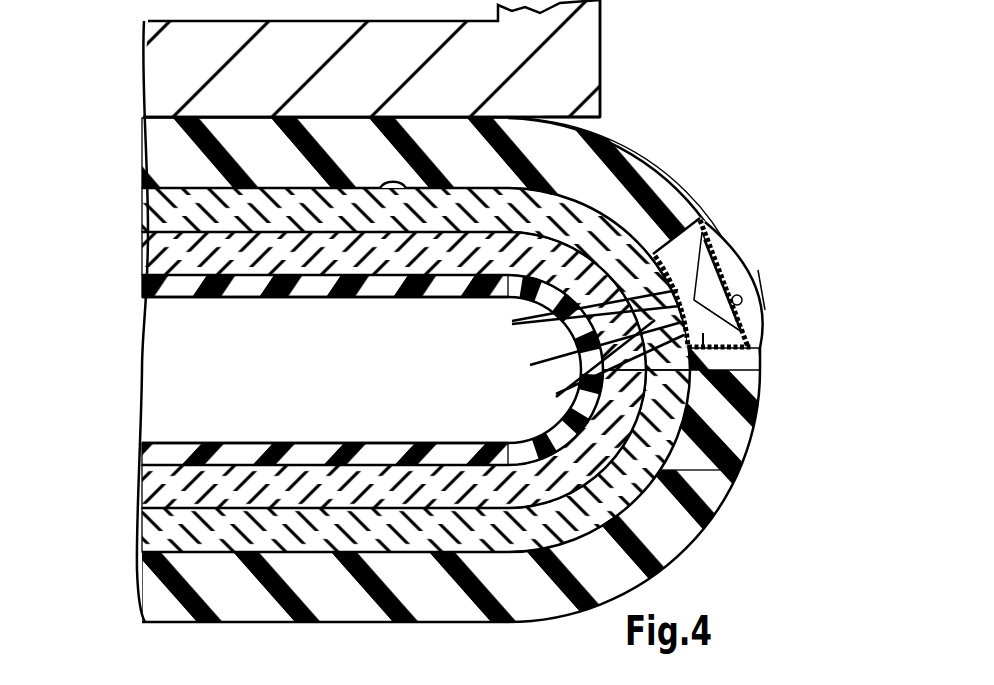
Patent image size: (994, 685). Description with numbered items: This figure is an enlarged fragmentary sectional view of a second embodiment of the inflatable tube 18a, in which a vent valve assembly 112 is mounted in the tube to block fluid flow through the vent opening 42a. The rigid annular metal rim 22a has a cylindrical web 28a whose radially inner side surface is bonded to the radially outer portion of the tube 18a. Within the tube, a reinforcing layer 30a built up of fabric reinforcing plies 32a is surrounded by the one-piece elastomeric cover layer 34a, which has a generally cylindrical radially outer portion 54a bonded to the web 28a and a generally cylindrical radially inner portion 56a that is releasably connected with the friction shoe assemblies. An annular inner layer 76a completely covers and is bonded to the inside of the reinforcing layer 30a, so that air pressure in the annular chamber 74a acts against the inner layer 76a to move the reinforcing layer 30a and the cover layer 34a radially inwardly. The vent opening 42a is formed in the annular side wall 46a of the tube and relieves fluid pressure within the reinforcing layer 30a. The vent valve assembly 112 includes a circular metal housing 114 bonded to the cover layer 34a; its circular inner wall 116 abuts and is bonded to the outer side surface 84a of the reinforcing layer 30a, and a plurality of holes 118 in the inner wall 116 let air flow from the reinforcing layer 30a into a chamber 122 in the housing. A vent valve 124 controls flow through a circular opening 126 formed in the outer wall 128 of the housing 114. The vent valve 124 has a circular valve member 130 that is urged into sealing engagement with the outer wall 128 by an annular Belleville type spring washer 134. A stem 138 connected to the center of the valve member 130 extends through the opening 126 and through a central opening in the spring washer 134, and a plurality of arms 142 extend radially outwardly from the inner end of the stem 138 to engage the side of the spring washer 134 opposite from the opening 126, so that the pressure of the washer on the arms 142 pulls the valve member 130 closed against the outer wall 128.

The rim 22a is at (622, 37).
The cylindrical web 28a is at (168, 75).
The cover layer 34a is at (571, 115).
The radially outer portion 54a is at (162, 150).
The radially inner portion 56a is at (153, 597).
The reinforcing ply 32a is at (165, 200).
The reinforcing layer 30a is at (265, 292).
The annular inner layer 76a is at (241, 457).
The annular chamber 74a is at (332, 388).
The outer side surface 84a is at (385, 186).
The annular side wall 46a is at (752, 503).
The inflatable tube 18a is at (682, 559).
The arms 142 is at (655, 250).
The outer wall 128 is at (703, 216).
The vent valve assembly 112 is at (744, 214).
The Belleville type spring washer 134 is at (730, 353).
The valve member 130 is at (756, 268).
The vent valve 124 is at (766, 261).
The vent opening 42a is at (797, 263).
The stem 138 is at (747, 287).
The circular opening 126 is at (752, 330).
The housing 114 is at (774, 350).
The chamber 122 is at (733, 400).
The holes 118 is at (574, 354).
The inner wall 116 is at (582, 352).